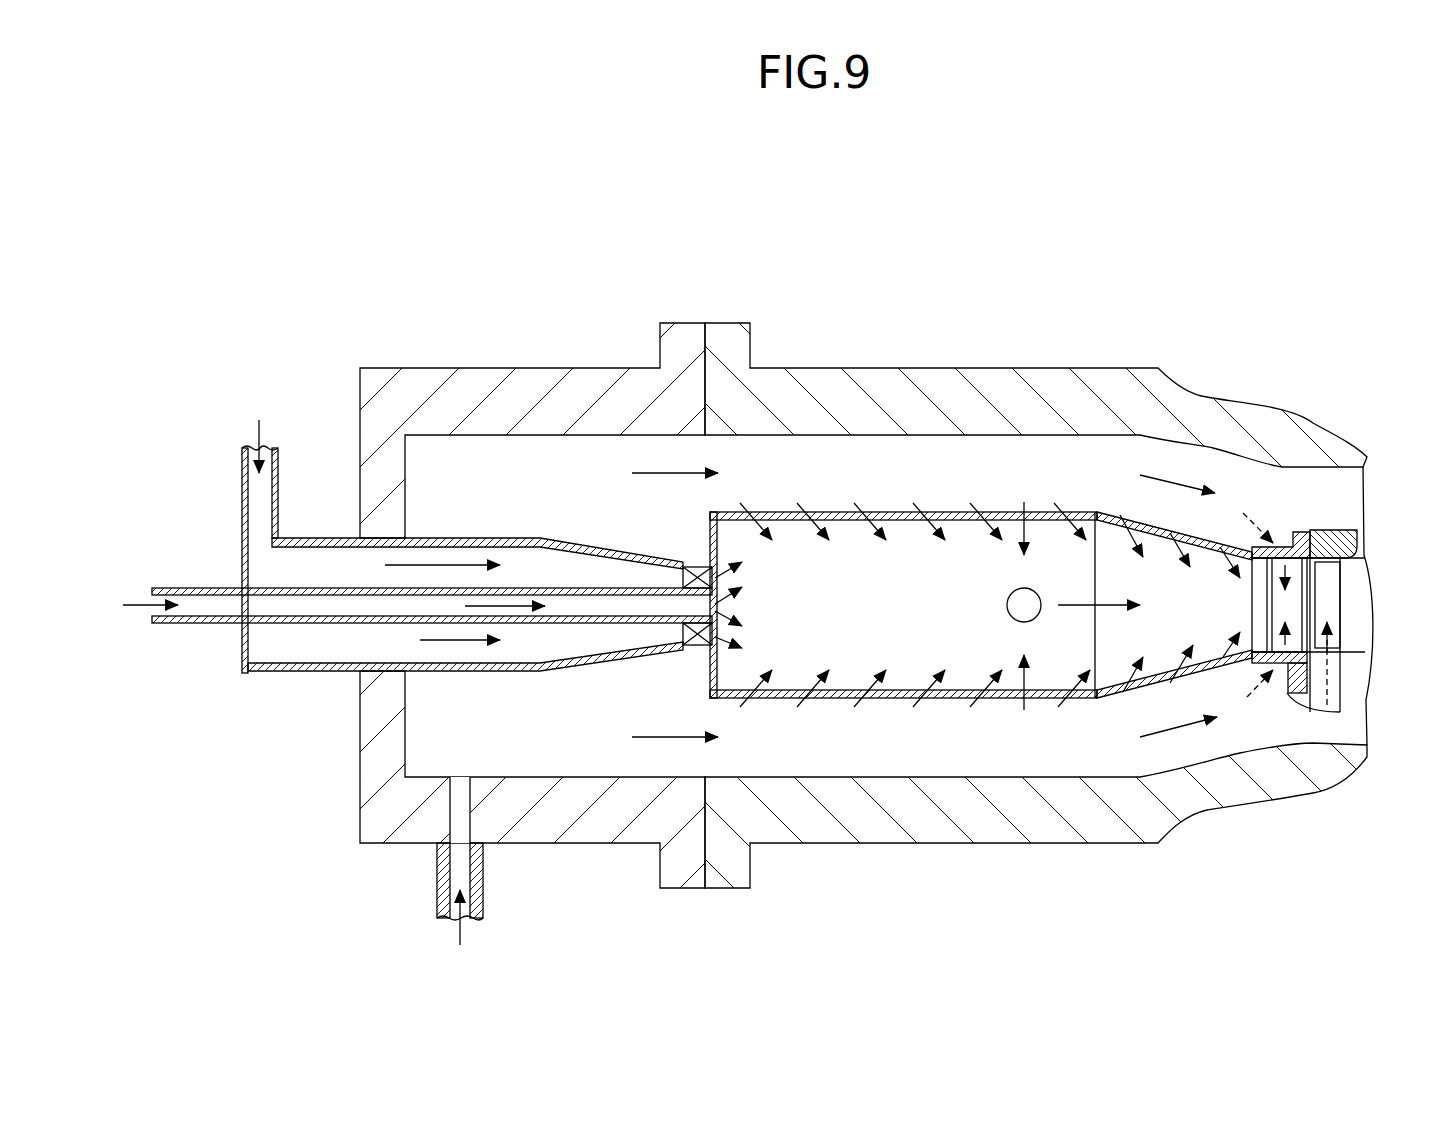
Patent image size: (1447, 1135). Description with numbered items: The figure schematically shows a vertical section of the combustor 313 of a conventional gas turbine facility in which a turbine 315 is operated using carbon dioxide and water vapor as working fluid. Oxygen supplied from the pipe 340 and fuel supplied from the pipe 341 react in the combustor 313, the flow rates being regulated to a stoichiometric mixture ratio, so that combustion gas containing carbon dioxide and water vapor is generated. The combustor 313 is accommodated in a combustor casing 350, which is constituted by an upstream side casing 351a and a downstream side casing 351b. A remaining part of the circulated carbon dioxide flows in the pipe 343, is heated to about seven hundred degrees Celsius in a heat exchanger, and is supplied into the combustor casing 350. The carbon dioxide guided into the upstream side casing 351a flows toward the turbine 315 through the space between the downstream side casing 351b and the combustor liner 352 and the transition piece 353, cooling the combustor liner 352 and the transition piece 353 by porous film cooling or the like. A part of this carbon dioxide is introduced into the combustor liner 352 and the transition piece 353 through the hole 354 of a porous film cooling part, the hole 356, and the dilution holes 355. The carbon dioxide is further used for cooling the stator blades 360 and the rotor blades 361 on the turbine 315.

The combustor casing 350 is at (708, 262).
The upstream side casing 351a is at (589, 387).
The downstream side casing 351b is at (765, 387).
The combustor 313 is at (690, 528).
The turbine 315 is at (1358, 500).
The pipe 340 is at (242, 485).
The pipe 341 is at (210, 625).
The pipe 343 is at (437, 878).
The combustor liner 352 is at (953, 702).
The transition piece 353 is at (1208, 667).
The hole 354 is at (865, 702).
The dilution hole 355 is at (1005, 604).
The annular air passage 356 is at (1125, 695).
The stator blade 360 is at (1290, 593).
The rotor blade 361 is at (1325, 620).